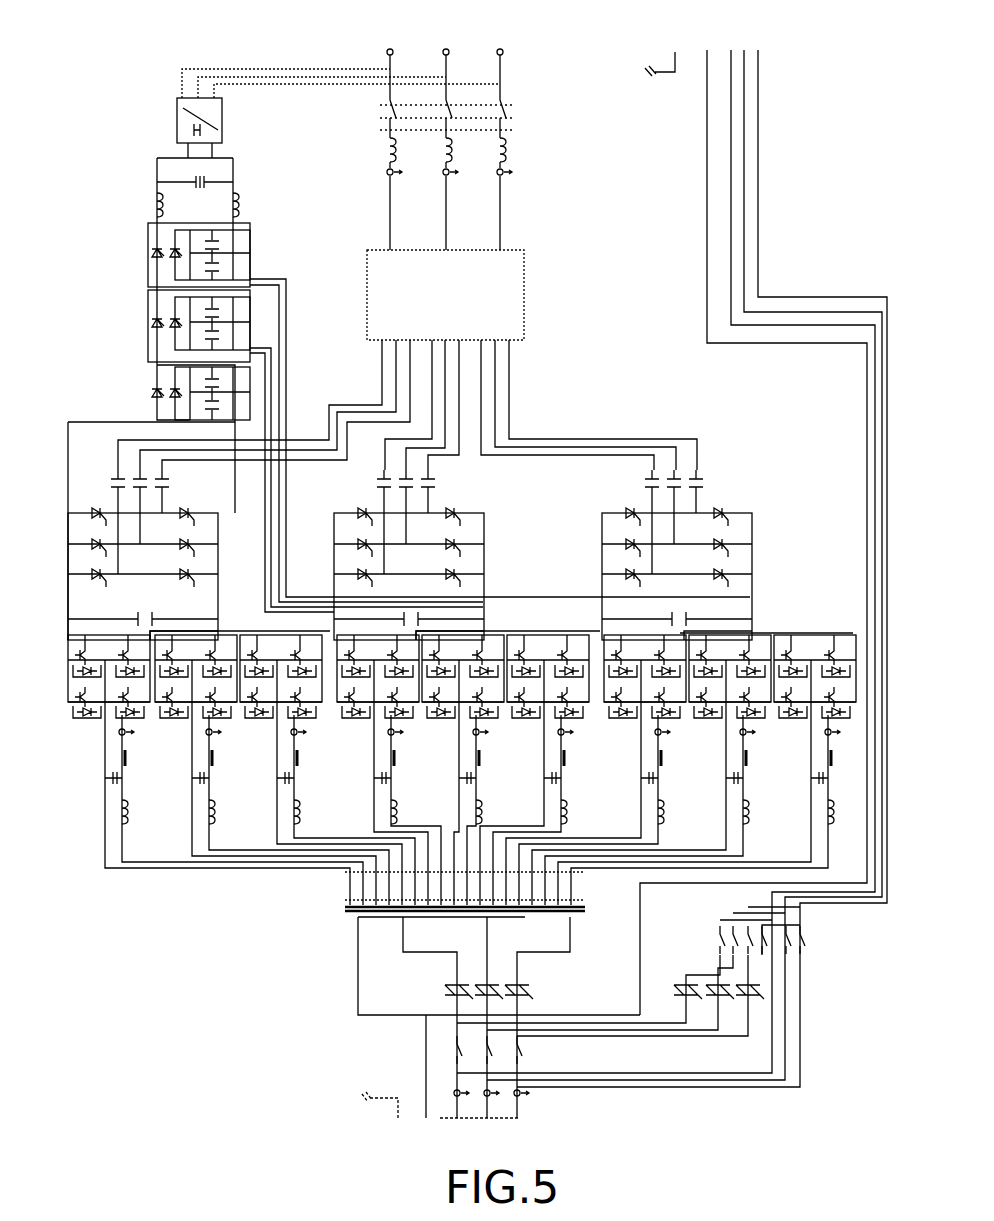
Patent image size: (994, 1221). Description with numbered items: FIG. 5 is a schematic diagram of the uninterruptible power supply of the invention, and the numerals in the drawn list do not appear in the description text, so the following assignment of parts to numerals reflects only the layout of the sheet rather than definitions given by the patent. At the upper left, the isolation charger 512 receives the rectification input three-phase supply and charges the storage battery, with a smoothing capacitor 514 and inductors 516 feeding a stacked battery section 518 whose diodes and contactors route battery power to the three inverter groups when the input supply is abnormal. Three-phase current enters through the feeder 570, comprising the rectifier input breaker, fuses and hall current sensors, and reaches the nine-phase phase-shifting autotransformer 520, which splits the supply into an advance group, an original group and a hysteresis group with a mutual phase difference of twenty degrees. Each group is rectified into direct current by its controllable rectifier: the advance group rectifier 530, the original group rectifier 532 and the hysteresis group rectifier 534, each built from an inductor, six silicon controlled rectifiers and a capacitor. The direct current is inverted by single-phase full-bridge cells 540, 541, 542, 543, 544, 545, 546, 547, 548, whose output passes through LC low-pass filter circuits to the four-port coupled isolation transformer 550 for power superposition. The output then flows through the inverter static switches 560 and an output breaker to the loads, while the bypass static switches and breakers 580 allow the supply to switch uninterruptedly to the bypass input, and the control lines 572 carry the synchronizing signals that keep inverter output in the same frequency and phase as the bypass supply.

The DC/DC converter 512 is at (210, 120).
The capacitor 514 is at (195, 194).
The inductor 516 is at (206, 205).
The storage stack 518 is at (159, 431).
The controller 520 is at (407, 360).
The inverter module 530 is at (199, 555).
The inverter module 532 is at (467, 555).
The inverter module 534 is at (727, 555).
The power cell 540 is at (215, 770).
The power cell 541 is at (272, 770).
The power cell 542 is at (327, 770).
The power cell 543 is at (389, 770).
The power cell 544 is at (463, 770).
The power cell 545 is at (534, 770).
The power cell 546 is at (596, 770).
The power cell 547 is at (651, 770).
The power cell 548 is at (707, 770).
The bus bar 550 is at (475, 893).
The triac switch bank 560 is at (581, 1012).
The AC input feeder 570 is at (451, 149).
The control lines 572 is at (672, 568).
The output switches 580 is at (445, 1084).